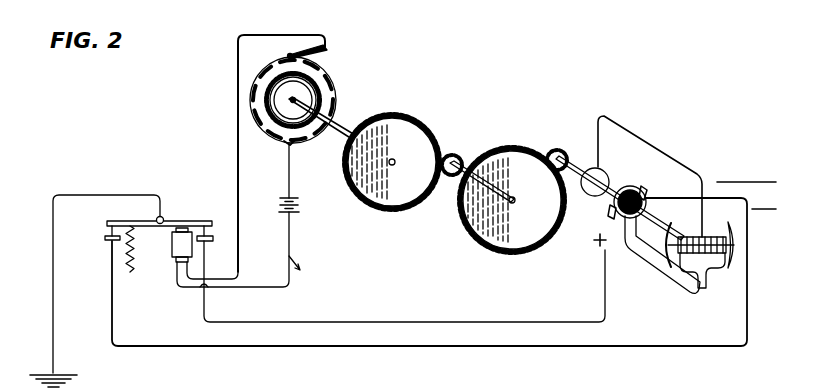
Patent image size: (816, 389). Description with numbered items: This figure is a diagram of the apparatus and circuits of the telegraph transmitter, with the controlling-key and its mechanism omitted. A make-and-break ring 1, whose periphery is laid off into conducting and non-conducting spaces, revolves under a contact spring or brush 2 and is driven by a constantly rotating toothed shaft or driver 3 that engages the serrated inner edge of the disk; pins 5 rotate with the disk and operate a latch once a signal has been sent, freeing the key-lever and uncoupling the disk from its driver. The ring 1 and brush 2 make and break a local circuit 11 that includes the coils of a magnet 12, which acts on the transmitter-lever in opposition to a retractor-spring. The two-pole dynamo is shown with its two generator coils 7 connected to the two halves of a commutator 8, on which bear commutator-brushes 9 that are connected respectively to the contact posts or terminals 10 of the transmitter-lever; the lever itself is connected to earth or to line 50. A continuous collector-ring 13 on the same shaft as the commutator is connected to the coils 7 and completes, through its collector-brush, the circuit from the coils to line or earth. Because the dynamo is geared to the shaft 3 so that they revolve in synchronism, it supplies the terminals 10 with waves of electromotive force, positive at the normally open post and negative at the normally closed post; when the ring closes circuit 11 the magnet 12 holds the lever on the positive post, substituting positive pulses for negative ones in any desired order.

The make-and-break ring 1 is at (330, 96).
The contact spring or brush 2 is at (315, 53).
The rotating shaft or driver 3 is at (293, 100).
The pins 5 is at (289, 56).
The generator coils 7 is at (668, 245).
The commutator 8 is at (633, 190).
The commutator-brushes 9 is at (645, 189).
The contact posts or terminals 10 is at (107, 239).
The local circuit 11 is at (238, 166).
The magnet 12 is at (172, 249).
The continuous collector-ring 13 is at (591, 187).
The line 50 is at (746, 186).